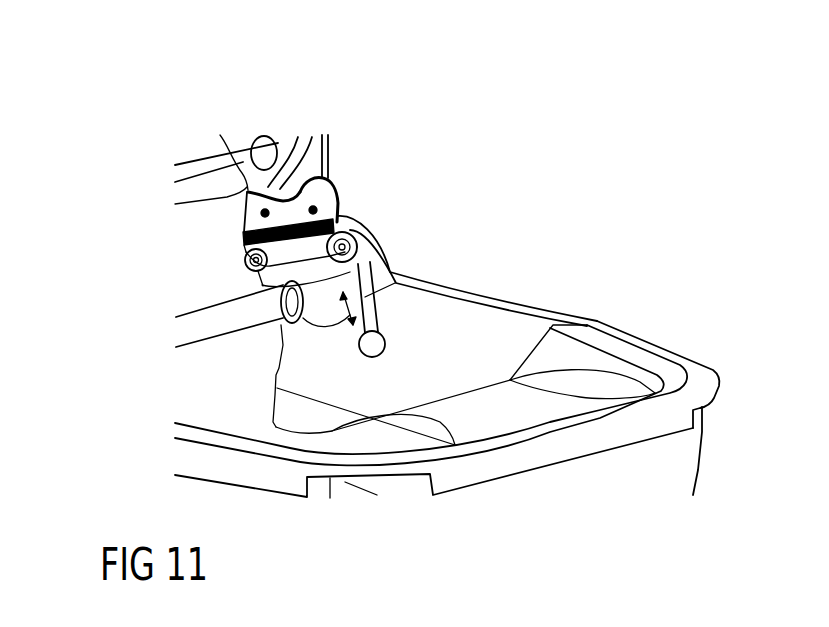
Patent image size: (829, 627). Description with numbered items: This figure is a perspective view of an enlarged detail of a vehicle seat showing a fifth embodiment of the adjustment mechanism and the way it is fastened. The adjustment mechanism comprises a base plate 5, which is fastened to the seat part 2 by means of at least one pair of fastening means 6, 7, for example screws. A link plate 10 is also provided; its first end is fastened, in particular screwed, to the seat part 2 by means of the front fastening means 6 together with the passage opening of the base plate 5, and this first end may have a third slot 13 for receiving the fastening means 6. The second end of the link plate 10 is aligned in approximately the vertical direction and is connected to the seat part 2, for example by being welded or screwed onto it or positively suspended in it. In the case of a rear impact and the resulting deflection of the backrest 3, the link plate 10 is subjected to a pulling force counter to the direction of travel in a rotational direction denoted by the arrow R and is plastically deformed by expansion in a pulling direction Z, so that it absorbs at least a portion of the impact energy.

The seat part 2 is at (493, 327).
The backrest 3 is at (236, 140).
The base plate 5 is at (330, 180).
The front fastening means 6 is at (368, 227).
The fastening means 7 is at (245, 263).
The link plate 10 is at (425, 273).
The third slot 13 is at (256, 277).
The rotational direction R is at (421, 131).
The pulling direction Z is at (281, 331).